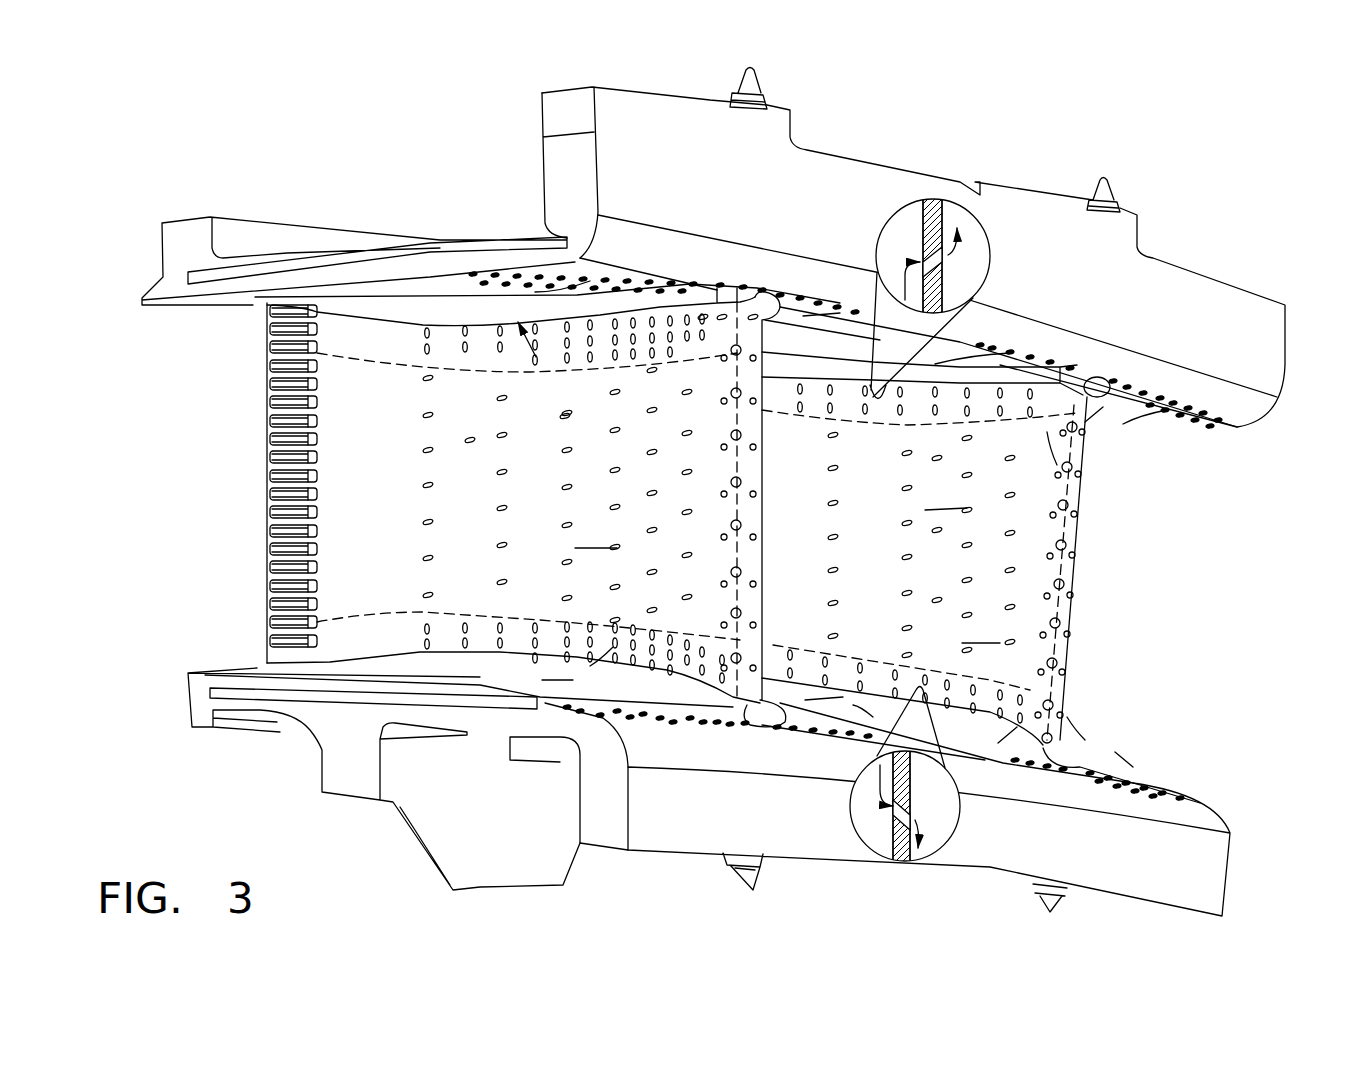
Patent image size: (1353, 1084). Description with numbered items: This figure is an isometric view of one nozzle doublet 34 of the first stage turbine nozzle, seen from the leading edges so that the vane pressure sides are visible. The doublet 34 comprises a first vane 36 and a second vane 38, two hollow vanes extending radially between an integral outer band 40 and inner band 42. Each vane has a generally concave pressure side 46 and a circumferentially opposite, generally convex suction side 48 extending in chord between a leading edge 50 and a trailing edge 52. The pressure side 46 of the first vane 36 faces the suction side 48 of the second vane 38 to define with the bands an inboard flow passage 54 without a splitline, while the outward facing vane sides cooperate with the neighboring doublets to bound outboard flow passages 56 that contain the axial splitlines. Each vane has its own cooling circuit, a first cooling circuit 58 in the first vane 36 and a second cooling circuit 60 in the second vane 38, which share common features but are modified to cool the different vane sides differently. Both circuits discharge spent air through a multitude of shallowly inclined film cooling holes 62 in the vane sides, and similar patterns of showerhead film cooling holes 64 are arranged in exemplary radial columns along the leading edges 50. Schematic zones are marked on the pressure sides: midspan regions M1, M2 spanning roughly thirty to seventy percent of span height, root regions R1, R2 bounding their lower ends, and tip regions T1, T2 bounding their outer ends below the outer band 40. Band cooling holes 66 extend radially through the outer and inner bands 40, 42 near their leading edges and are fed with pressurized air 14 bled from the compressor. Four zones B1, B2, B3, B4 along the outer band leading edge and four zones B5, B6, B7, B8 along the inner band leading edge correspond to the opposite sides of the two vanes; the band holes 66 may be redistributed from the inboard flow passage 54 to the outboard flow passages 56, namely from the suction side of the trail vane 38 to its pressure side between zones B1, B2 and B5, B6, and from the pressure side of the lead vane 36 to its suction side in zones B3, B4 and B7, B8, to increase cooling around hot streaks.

The air 14 is at (543, 213).
The nozzle doublet 34 is at (1177, 258).
The first vane 36 is at (1082, 583).
The second vane 38 is at (265, 552).
The outer band 40 is at (238, 303).
The inner band 42 is at (243, 670).
The pressure side 46 is at (520, 543).
The suction side 48 is at (1070, 652).
The leading edge 50 is at (735, 380).
The trailing edge 52 is at (267, 474).
The inboard flow passage 54 is at (782, 350).
The outboard flow passage 56 is at (183, 465).
The first cooling circuit 58 is at (828, 568).
The second cooling circuit 60 is at (426, 524).
The film cooling holes 62 is at (944, 243).
The showerhead film cooling holes 64 is at (734, 527).
The band cooling holes 66 is at (805, 290).
The outer band zone B1 is at (840, 308).
The outer band zone B2 is at (802, 208).
The outer band zone B3 is at (1150, 317).
The outer band zone B4 is at (1187, 403).
The inner band zone B5 is at (810, 735).
The inner band zone B6 is at (633, 725).
The inner band zone B7 is at (990, 760).
The inner band zone B8 is at (1137, 790).
The tip region T1 is at (581, 373).
The tip region T2 is at (862, 425).
The midspan region M1 is at (612, 498).
The midspan region M2 is at (593, 493).
The root region R1 is at (578, 606).
The root region R2 is at (853, 630).